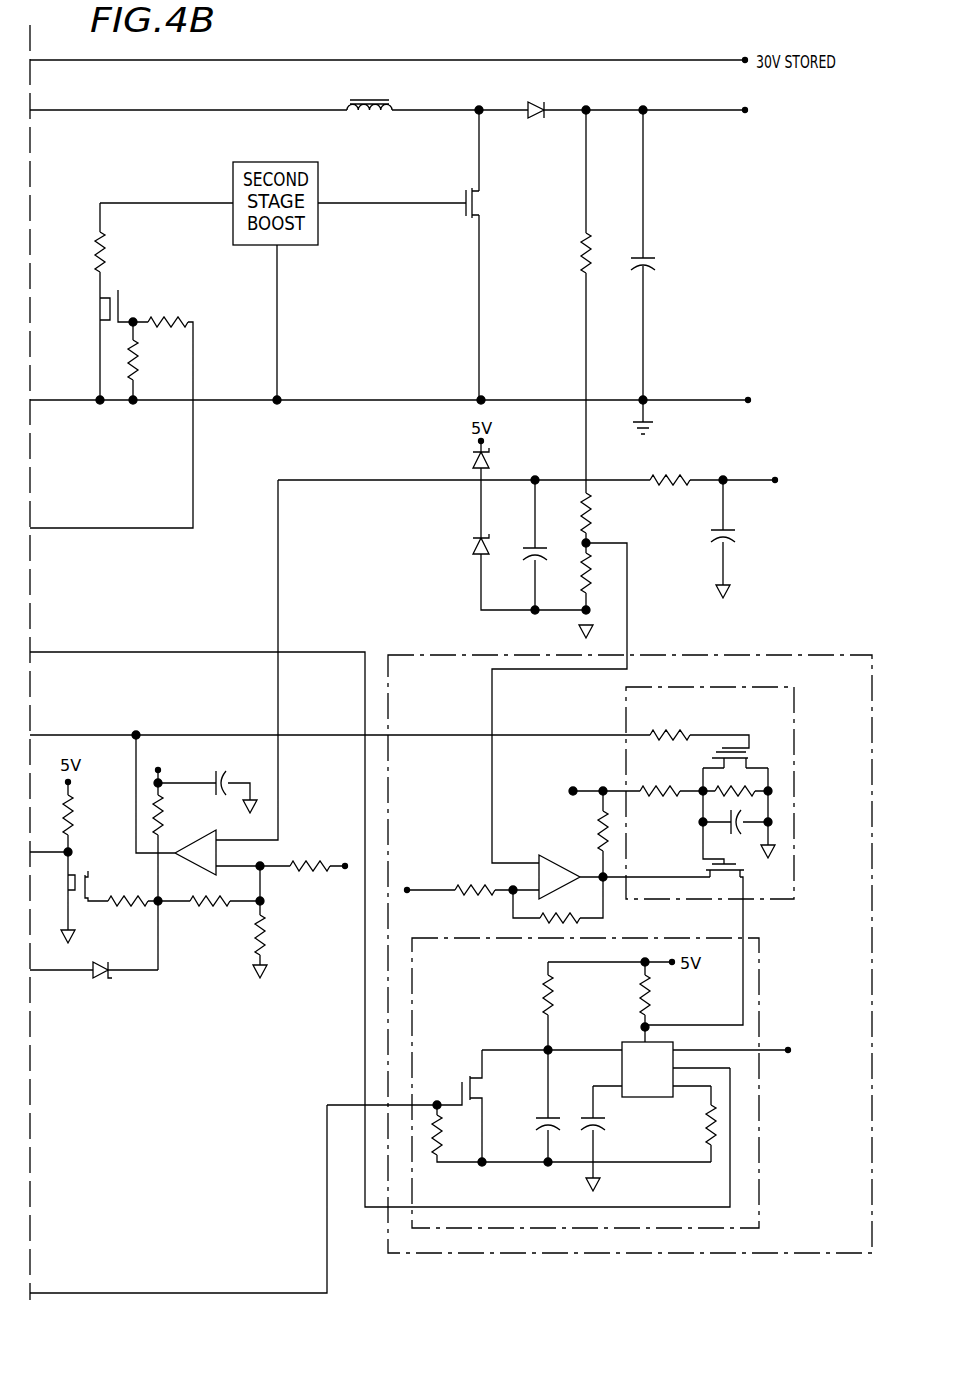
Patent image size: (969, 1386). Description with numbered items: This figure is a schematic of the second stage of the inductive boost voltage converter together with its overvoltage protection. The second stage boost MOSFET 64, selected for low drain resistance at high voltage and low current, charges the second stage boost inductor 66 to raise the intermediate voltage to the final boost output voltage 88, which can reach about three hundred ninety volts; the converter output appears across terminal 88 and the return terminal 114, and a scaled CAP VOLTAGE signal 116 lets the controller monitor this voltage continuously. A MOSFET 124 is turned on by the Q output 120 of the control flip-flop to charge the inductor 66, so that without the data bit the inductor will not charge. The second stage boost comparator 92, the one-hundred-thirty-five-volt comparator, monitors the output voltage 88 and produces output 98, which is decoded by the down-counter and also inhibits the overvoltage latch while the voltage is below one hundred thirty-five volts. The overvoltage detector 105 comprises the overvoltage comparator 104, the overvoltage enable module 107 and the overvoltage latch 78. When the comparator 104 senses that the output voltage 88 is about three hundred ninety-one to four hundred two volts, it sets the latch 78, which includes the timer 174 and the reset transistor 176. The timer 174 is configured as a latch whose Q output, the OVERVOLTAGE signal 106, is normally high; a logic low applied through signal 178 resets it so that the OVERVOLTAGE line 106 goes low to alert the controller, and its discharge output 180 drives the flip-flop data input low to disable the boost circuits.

The second stage boost MOSFET 64 is at (465, 193).
The second stage boost inductor 66 is at (381, 113).
The overvoltage latch 78 is at (760, 1188).
The second stage boost output voltage 88 is at (683, 106).
The second stage boost comparator 92 is at (198, 840).
The comparator output 98 is at (136, 734).
The overvoltage comparator 104 is at (565, 855).
The overvoltage detector 105 is at (775, 653).
The OVERVOLTAGE signal 106 is at (775, 1048).
The overvoltage enable module 107 is at (795, 858).
The output terminal 114 is at (703, 399).
The CAP VOLTAGE signal 116 is at (745, 478).
The Q output 120 is at (193, 453).
The MOSFET 124 is at (119, 303).
The timer 174 is at (637, 1098).
The reset transistor 176 is at (462, 1084).
The reset signal 178 is at (588, 1048).
The discharge output 180 is at (730, 1183).